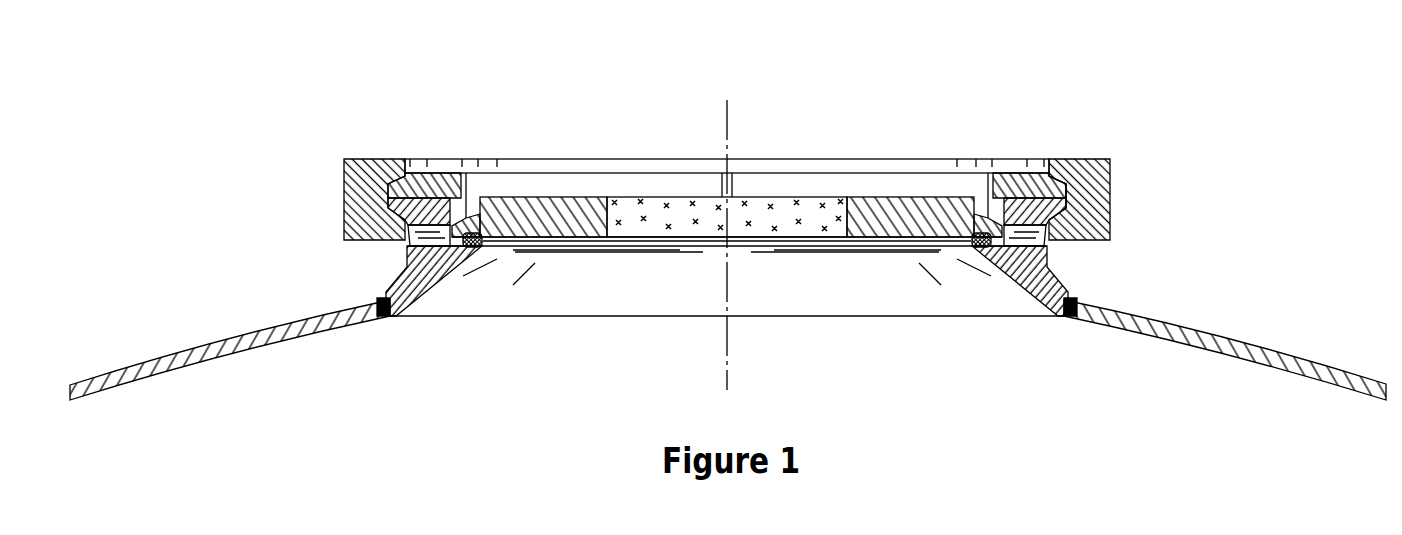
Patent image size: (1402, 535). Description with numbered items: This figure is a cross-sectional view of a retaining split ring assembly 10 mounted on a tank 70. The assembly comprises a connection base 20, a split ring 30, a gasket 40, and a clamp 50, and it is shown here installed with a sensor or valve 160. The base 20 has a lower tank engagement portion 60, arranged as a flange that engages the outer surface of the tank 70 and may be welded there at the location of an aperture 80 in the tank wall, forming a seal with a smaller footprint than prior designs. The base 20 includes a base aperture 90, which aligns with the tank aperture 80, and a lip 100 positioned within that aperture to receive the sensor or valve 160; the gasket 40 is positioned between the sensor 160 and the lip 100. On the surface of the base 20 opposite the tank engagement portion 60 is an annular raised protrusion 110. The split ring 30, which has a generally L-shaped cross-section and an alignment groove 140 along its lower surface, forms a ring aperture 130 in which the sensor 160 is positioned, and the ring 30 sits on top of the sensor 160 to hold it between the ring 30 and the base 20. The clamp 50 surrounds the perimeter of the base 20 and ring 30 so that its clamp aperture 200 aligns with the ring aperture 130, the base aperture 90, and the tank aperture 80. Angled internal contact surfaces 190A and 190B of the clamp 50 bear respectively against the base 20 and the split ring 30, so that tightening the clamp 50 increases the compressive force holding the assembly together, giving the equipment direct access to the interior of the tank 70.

The retaining split ring assembly 10 is at (1278, 110).
The connection base 20 is at (413, 213).
The split ring 30 is at (1007, 180).
The gasket 40 is at (980, 246).
The clamp 50 is at (1090, 180).
The tank engagement portion 60 is at (1045, 272).
The tank 70 is at (98, 382).
The aperture 80 is at (558, 316).
The base aperture 90 is at (637, 258).
The lip 100 is at (445, 258).
The protrusion 110 is at (398, 188).
The ring aperture 130 is at (607, 185).
The alignment groove 140 is at (400, 186).
The sensor or valve 160 is at (875, 213).
The first contact surface 190A is at (1058, 209).
The second contact surface 190B is at (1055, 186).
The clamp aperture 200 is at (783, 167).